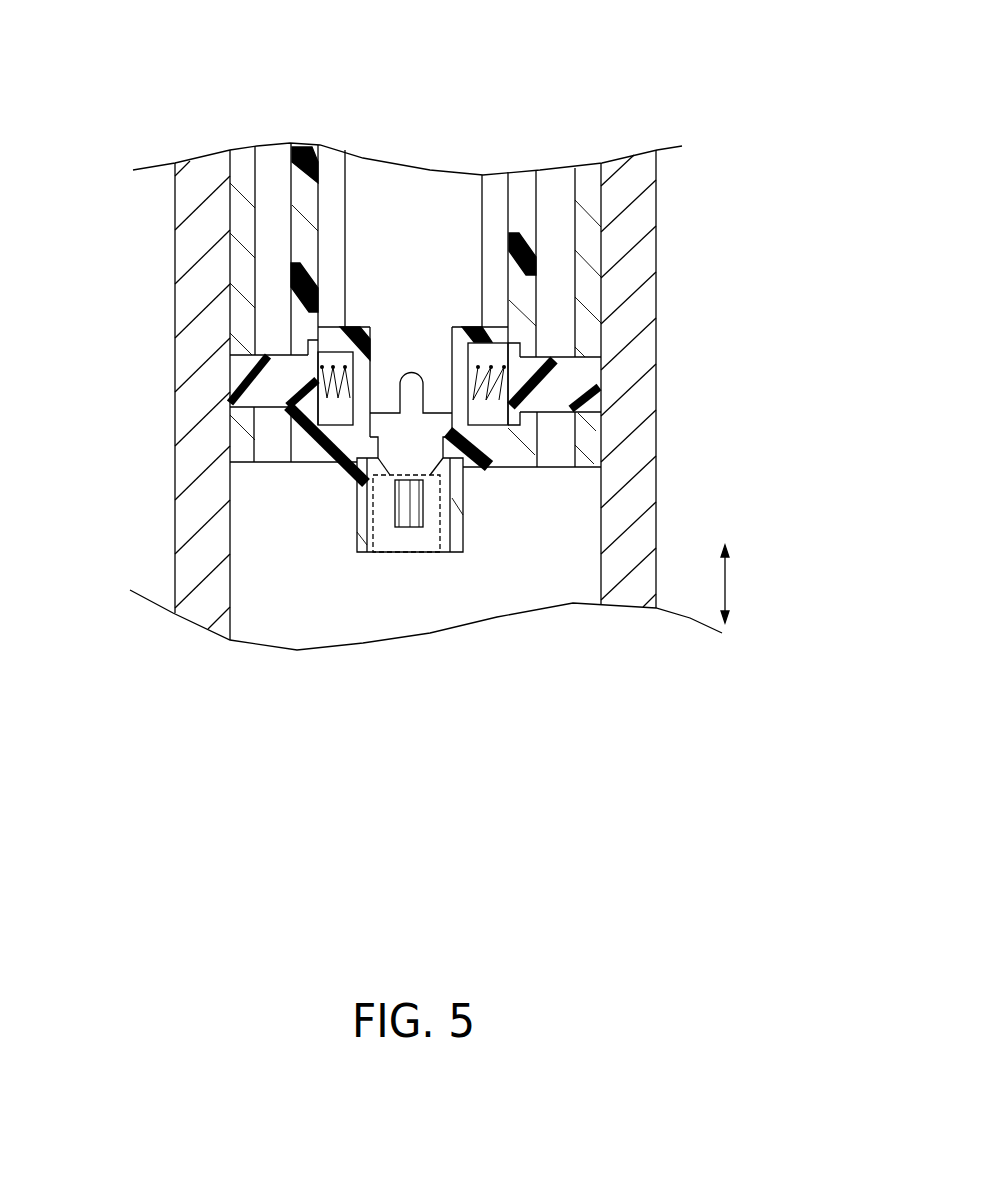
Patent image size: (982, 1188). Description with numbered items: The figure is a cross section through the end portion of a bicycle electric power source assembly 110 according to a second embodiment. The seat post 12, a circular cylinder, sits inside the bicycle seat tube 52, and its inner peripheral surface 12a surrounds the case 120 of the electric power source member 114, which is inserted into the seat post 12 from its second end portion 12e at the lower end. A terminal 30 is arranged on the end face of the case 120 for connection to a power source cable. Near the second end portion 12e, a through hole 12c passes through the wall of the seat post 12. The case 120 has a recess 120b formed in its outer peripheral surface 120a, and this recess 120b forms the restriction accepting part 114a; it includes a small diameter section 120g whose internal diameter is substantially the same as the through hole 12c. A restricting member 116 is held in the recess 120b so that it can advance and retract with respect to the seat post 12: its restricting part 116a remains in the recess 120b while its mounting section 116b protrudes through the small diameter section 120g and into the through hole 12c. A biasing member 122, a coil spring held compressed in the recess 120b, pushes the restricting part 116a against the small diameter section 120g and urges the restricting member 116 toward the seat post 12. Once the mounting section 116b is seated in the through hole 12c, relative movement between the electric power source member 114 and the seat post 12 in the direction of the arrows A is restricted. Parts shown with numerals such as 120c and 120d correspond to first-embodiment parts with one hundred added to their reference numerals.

The seat post 12 is at (656, 160).
The inner peripheral surface 12a is at (637, 540).
The through hole 12c is at (232, 407).
The second end portion 12e is at (183, 587).
The terminal 30 is at (410, 527).
The seat tube 52 is at (657, 488).
The bicycle electric power source assembly 110 is at (447, 130).
The electric power source member 114 is at (282, 165).
The restriction accepting part 114a is at (326, 407).
The restricting member 116 is at (222, 359).
The restricting part 116a is at (493, 355).
The mounting section 116b is at (243, 467).
The case 120 is at (282, 235).
The outer peripheral surface 120a is at (610, 191).
The recess 120b is at (308, 359).
The sealing band 120c is at (333, 327).
The sleeve lower end 120d is at (303, 467).
The small diameter section 120g is at (312, 375).
The biasing member 122 is at (327, 467).
The arrows A is at (730, 580).